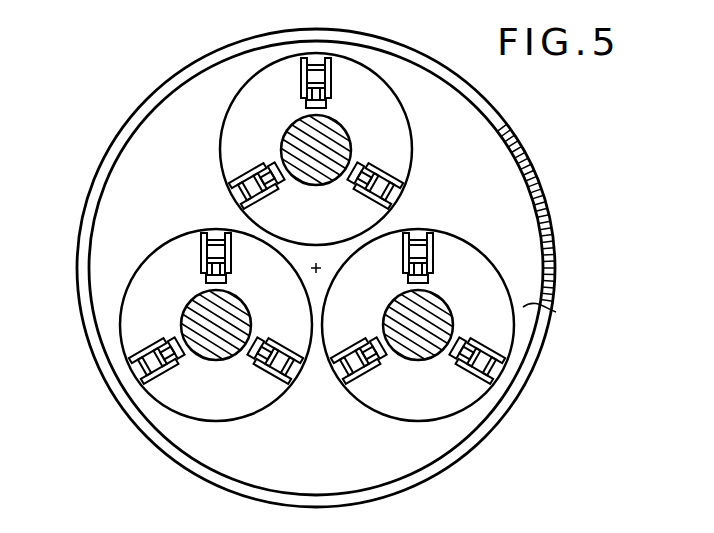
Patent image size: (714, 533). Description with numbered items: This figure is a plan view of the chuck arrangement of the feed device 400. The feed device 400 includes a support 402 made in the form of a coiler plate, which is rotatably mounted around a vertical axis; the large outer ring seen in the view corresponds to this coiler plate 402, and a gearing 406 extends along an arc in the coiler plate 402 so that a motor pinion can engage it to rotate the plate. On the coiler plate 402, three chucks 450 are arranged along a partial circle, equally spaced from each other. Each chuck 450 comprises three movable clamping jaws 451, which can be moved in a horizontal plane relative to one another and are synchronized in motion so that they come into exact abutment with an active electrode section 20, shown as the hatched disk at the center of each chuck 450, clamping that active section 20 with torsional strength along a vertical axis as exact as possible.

The feed device 400 is at (133, 97).
The support 402 is at (556, 312).
The gearing 406 is at (88, 229).
The chuck 450 is at (180, 233).
The clamping jaw 451 is at (306, 105).
The active section 20 is at (338, 122).